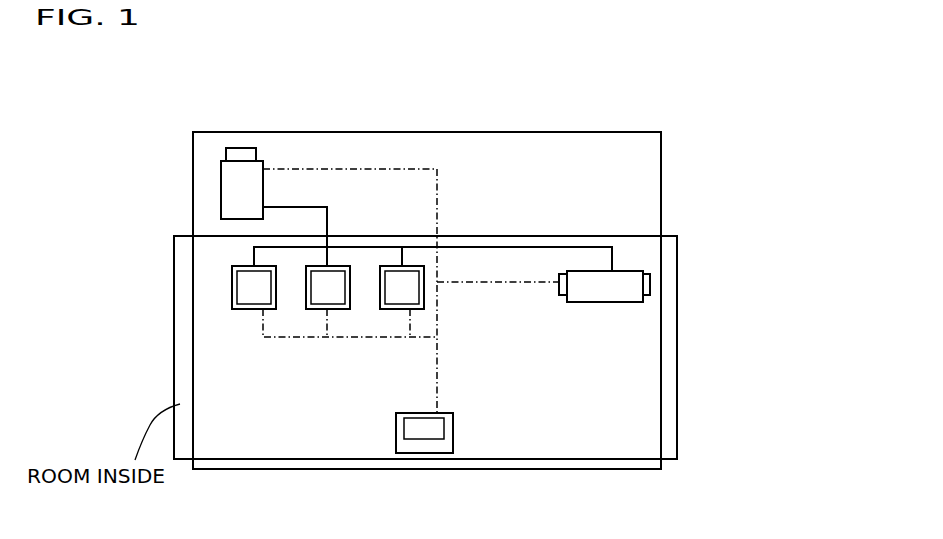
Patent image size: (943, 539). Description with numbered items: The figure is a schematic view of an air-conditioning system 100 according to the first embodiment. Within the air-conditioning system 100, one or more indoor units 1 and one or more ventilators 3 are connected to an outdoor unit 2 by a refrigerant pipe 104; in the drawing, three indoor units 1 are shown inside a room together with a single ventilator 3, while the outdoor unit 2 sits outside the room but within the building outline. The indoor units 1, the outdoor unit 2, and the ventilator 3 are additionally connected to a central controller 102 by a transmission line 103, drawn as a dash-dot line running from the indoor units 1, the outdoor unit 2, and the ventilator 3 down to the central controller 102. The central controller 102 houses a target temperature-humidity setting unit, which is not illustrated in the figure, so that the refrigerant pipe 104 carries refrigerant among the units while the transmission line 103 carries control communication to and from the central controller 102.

The air-conditioning system 100 is at (662, 133).
The indoor unit 1 is at (260, 295).
The outdoor unit 2 is at (250, 170).
The ventilator 3 is at (605, 282).
The central controller 102 is at (403, 445).
The transmission line 103 is at (361, 336).
The refrigerant pipe 104 is at (328, 222).